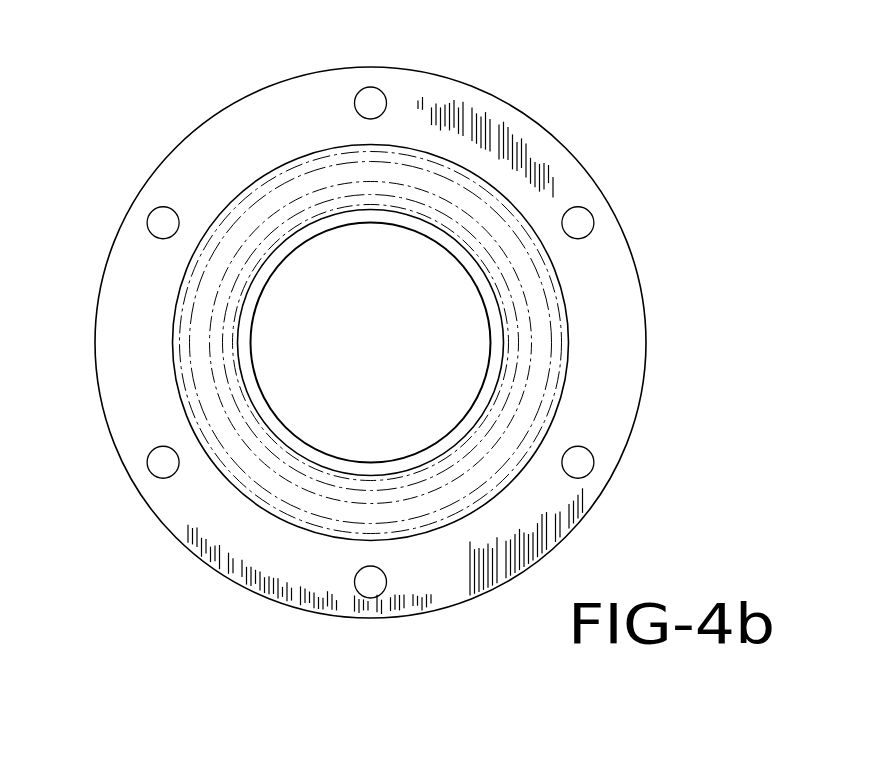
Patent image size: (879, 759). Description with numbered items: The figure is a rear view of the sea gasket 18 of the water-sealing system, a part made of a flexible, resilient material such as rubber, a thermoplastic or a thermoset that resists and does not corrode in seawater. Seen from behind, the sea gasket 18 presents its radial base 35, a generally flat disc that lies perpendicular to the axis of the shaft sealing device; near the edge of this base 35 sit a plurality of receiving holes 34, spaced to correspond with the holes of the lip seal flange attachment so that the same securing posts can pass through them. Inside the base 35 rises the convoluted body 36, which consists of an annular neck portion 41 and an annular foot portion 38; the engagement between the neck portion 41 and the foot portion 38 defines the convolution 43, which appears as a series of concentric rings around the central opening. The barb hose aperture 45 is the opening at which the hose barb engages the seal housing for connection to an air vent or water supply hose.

The sea gasket 18 is at (195, 122).
The receiving holes 34 is at (160, 220).
The radial base 35 is at (130, 297).
The convoluted body 36 is at (231, 474).
The annular foot portion 38 is at (310, 236).
The annular neck portion 41 is at (173, 365).
The convolution 43 is at (540, 313).
The barb hose aperture 45 is at (488, 380).